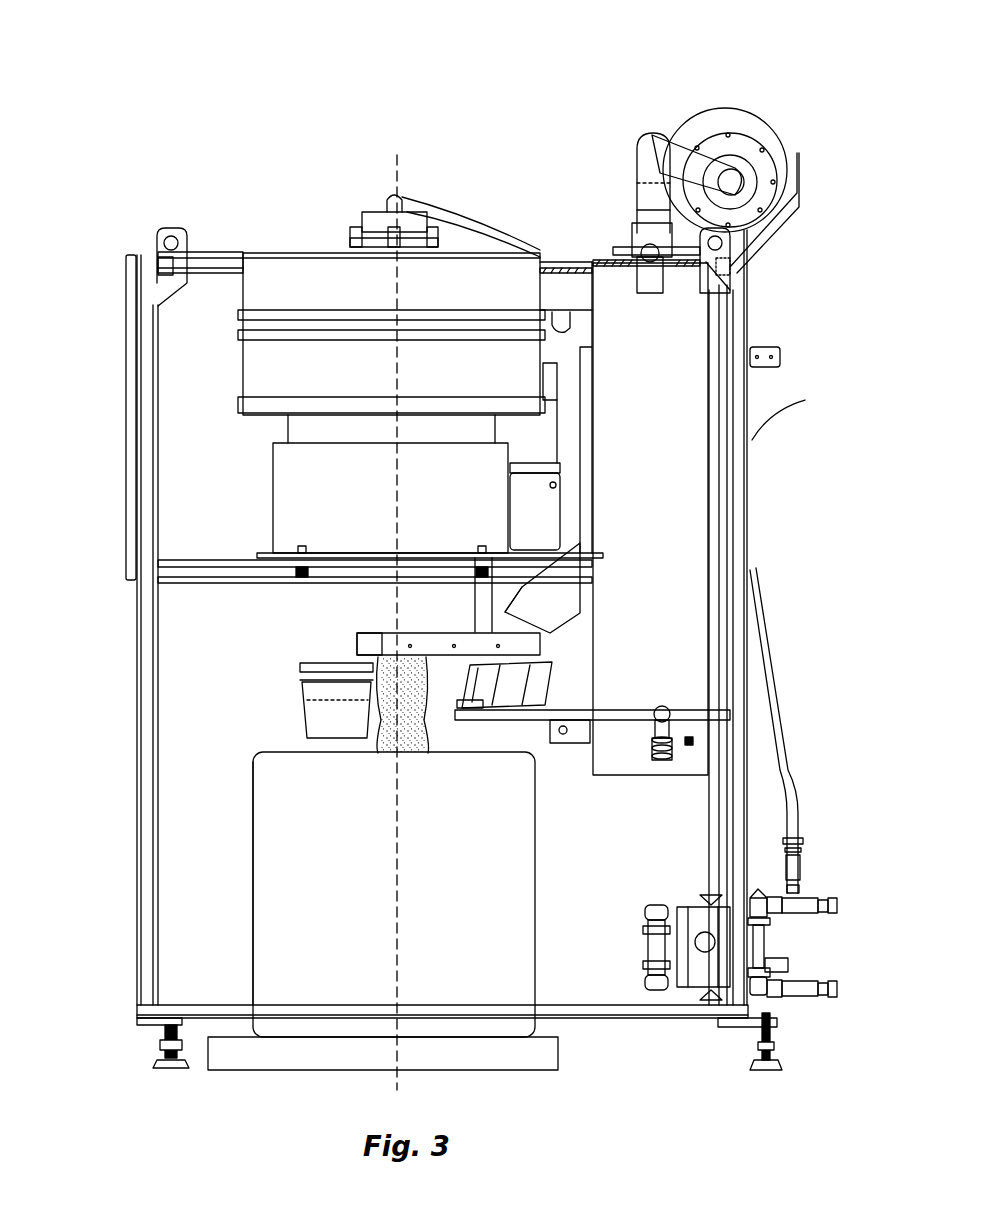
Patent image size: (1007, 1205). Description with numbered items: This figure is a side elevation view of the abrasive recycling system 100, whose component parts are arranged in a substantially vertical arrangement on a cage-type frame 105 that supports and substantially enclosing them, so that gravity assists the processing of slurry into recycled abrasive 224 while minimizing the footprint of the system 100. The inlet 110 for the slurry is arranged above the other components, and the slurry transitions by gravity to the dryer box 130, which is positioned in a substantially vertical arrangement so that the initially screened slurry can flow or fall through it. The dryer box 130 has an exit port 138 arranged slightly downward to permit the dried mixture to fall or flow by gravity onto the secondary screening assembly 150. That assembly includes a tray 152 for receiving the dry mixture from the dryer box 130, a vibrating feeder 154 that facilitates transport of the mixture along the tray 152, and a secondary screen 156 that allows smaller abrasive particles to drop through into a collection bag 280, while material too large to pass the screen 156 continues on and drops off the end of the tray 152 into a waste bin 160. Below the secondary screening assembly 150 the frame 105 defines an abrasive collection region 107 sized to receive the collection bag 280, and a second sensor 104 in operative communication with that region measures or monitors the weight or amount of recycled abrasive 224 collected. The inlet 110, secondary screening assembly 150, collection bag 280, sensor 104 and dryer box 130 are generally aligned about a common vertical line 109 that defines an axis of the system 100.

The abrasive recycling system 100 is at (118, 52).
The second sensor 104 is at (560, 1047).
The frame 105 is at (738, 478).
The abrasive collection region 107 is at (238, 912).
The common vertical line 109 is at (400, 172).
The inlet 110 is at (388, 197).
The dryer box 130 is at (652, 457).
The exit port 138 is at (565, 597).
The secondary screening assembly 150 is at (327, 650).
The tray 152 is at (368, 633).
The vibrating feeder 154 is at (495, 687).
The secondary screen 156 is at (413, 623).
The waste bin 160 is at (310, 692).
The recycled abrasive 224 is at (387, 705).
The collection bag 280 is at (253, 813).